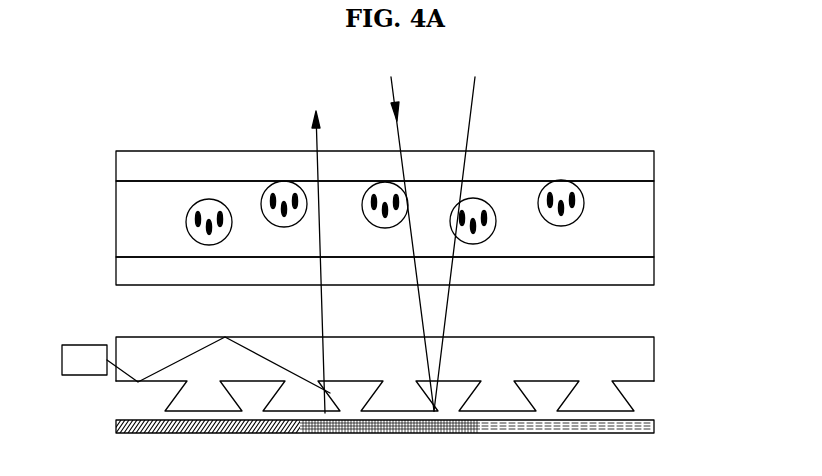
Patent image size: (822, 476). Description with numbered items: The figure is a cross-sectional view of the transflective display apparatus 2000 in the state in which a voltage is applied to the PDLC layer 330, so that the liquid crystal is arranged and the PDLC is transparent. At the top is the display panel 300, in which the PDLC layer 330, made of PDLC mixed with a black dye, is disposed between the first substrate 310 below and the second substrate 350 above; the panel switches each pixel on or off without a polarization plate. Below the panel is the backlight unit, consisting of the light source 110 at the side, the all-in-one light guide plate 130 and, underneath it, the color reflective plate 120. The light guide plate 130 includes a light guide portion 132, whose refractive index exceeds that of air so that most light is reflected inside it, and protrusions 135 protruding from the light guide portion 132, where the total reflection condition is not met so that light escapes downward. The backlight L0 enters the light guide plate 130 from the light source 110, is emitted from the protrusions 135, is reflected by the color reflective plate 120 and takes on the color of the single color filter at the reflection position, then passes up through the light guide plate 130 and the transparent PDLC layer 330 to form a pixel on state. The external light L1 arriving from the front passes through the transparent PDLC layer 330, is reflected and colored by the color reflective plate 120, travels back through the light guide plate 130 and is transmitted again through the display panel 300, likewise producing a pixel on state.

The transflective display apparatus 2000 is at (605, 122).
The display panel 300 is at (101, 150).
The second substrate 350 is at (648, 160).
The PDLC layer 330 is at (648, 214).
The first substrate 310 is at (648, 272).
The all-in-one light guide plate 130 is at (701, 345).
The light guide portion 132 is at (648, 358).
The protrusions 135 is at (612, 398).
The color reflective plate 120 is at (655, 428).
The light source 110 is at (78, 374).
The backlight L0 is at (179, 358).
The external light L1 is at (397, 120).